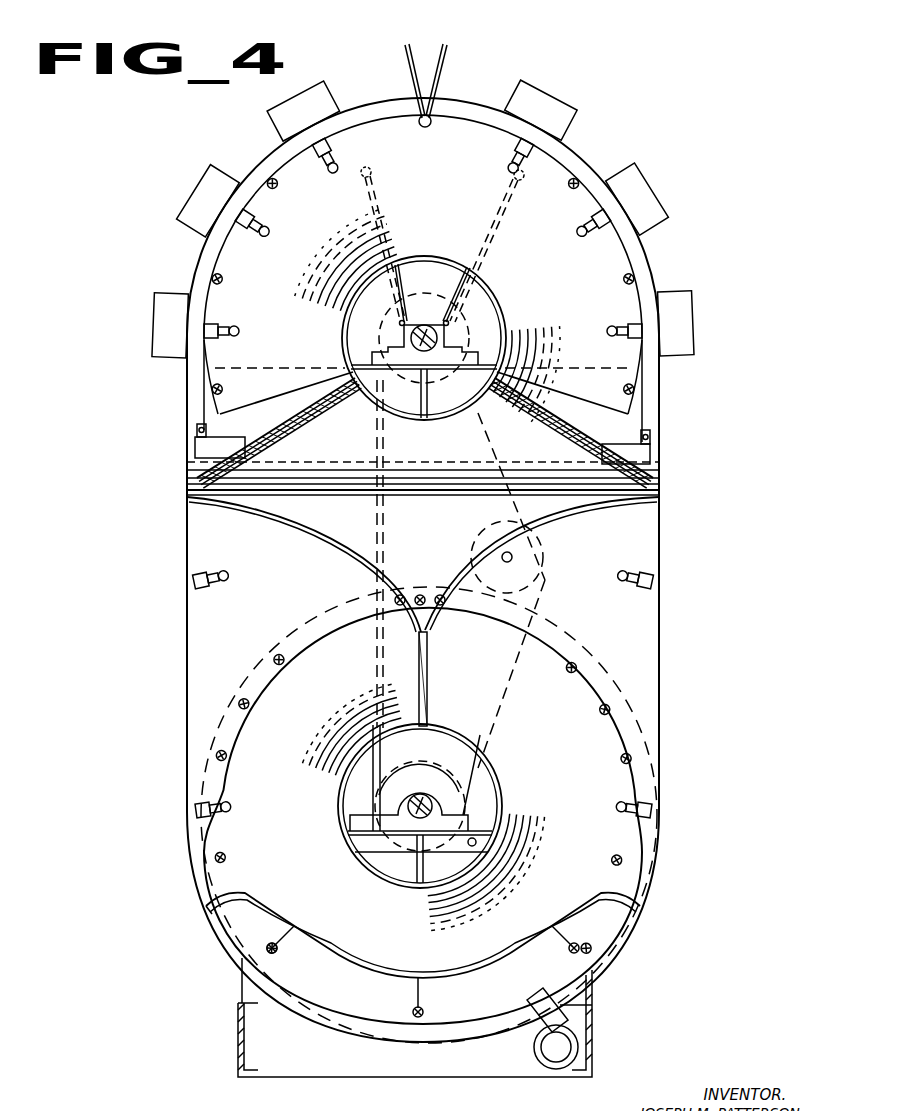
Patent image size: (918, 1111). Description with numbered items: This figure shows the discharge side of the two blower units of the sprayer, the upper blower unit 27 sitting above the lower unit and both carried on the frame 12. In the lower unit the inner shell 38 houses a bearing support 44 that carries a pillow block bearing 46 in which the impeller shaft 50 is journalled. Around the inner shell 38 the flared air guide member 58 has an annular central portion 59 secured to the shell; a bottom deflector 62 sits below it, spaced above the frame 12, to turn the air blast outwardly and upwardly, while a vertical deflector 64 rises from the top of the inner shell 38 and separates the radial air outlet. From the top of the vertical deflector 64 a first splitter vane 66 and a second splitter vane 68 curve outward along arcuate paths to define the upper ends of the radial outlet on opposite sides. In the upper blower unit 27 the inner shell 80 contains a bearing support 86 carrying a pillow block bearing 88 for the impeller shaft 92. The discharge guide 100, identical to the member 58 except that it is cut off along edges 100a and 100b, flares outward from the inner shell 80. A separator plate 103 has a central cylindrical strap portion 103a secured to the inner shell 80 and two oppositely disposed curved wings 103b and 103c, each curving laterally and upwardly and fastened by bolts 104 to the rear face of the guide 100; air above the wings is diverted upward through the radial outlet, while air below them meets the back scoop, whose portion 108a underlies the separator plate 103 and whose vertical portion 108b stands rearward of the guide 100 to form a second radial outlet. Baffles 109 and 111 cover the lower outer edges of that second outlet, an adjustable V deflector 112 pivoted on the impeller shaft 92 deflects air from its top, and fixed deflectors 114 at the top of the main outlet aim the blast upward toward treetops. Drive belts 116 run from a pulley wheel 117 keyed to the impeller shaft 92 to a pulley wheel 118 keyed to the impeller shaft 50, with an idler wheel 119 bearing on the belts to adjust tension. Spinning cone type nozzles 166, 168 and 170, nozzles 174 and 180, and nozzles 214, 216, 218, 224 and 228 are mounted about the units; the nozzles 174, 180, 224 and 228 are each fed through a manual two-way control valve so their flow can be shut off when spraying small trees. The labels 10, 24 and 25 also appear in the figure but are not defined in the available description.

The dust collecting apparatus 10 is at (160, 254).
The frame 12 is at (236, 1047).
The lower housing 24 is at (660, 623).
The lower drum 25 is at (590, 745).
The upper blower unit 27 is at (592, 274).
The inner shell 38 is at (500, 790).
The bearing support 44 is at (498, 822).
The pillow block bearing 46 is at (396, 822).
The impeller shaft 50 is at (406, 808).
The flared air guide member 58 is at (226, 879).
The annular central portion 59 is at (362, 872).
The bottom deflector 62 is at (402, 968).
The vertical deflector 64 is at (428, 675).
The first splitter vane 66 is at (566, 514).
The second splitter vane 68 is at (306, 520).
The inner shell 80 is at (490, 302).
The bearing support 86 is at (502, 342).
The pillow block bearing 88 is at (382, 338).
The impeller shaft 92 is at (424, 322).
The discharge guide 100 is at (408, 190).
The cut-off edge 100a is at (322, 392).
The cut-off edge 100b is at (560, 402).
The separator plate 103 is at (428, 433).
The central cylindrical strap portion 103a is at (394, 433).
The curved wing 103b is at (250, 414).
The curved wing 103c is at (572, 422).
The bolts 104 is at (214, 390).
The underlying portion of back scoop 108a is at (447, 494).
The vertical portion of back scoop 108b is at (585, 172).
The baffle 109 is at (650, 456).
The baffle 111 is at (194, 452).
The adjustable V deflector 112 is at (422, 268).
The fixed deflectors 114 is at (448, 45).
The drive belts 116 is at (388, 450).
The pulley wheel 117 is at (452, 412).
The pulley wheel 118 is at (430, 781).
The idler wheel 119 is at (538, 578).
The nozzle 166 is at (214, 822).
The nozzle 168 is at (196, 580).
The nozzle 170 is at (228, 320).
The nozzle 174 is at (262, 222).
The nozzle 180 is at (338, 152).
The nozzle 214 is at (626, 822).
The nozzle 216 is at (645, 575).
The nozzle 218 is at (634, 342).
The nozzle 224 is at (592, 226).
The nozzle 228 is at (520, 157).